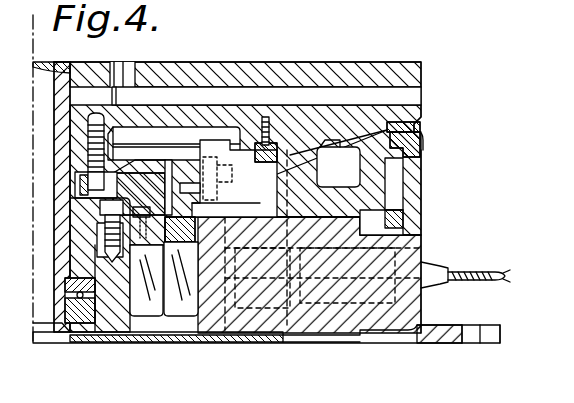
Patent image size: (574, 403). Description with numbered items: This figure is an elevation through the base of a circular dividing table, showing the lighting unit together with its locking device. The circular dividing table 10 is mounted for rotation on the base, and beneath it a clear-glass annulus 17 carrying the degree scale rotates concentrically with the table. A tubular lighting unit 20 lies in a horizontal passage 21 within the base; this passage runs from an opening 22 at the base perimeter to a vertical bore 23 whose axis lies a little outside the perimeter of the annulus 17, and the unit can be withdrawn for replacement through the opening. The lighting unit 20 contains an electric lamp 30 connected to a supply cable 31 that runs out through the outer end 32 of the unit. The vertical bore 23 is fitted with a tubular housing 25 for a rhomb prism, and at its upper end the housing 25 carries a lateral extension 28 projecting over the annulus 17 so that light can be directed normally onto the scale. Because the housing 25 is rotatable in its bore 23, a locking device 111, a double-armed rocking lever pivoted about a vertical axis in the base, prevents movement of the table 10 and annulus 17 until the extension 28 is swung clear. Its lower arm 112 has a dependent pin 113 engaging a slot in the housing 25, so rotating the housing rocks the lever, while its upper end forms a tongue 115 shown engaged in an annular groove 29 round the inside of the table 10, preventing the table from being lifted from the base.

The circular dividing table 10 is at (370, 63).
The clear-glass annulus 17 is at (110, 325).
The tubular lighting unit 20 is at (301, 343).
The horizontal passage 21 is at (333, 340).
The opening 22 is at (375, 348).
The vertical bore 23 is at (204, 348).
The tubular housing 25 is at (186, 340).
The lateral extension 28 is at (168, 150).
The annular groove 29 is at (150, 170).
The electric lamp 30 is at (263, 340).
The supply cable 31 is at (470, 268).
The outer end 32 is at (422, 222).
The locking device 111 is at (422, 158).
The lower arm 112 is at (423, 128).
The dependent pin 113 is at (138, 348).
The tongue 115 is at (300, 63).